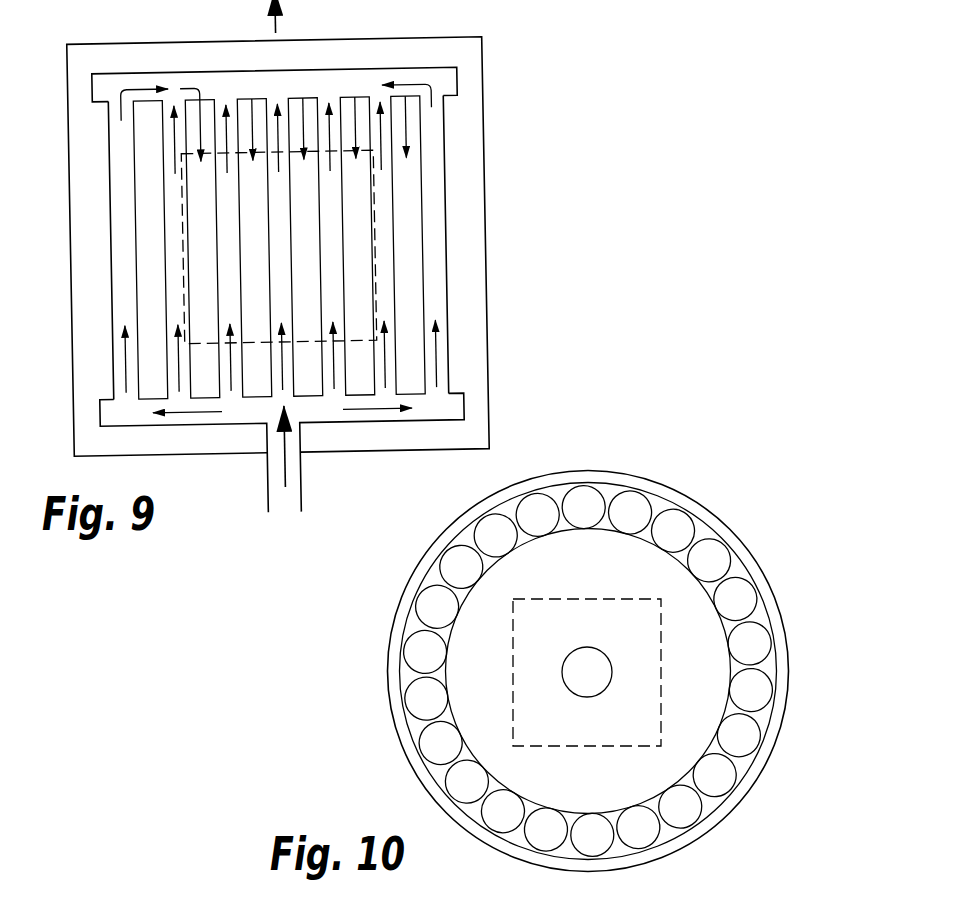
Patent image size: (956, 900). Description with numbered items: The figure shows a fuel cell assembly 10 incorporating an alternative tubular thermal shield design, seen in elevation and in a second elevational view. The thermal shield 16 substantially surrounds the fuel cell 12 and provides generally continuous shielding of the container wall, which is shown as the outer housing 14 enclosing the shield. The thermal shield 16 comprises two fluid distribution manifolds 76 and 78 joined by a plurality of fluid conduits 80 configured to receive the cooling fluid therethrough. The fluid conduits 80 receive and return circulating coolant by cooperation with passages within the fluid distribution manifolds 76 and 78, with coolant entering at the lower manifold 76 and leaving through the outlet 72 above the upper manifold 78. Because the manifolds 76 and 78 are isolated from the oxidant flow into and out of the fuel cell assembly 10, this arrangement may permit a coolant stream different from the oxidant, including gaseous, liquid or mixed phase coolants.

In FIG. 9, the fuel cell assembly 10 is at (299, 258).
In FIG. 10, the fuel cell assembly 10 is at (582, 671).
In FIG. 9, the fuel cell 12 is at (374, 205).
In FIG. 10, the fuel cell 12 is at (589, 635).
In FIG. 9, the outer housing 14 is at (488, 247).
In FIG. 10, the outer housing 14 is at (742, 543).
In FIG. 9, the thermal shield 16 is at (447, 130).
In FIG. 10, the thermal shield 16 is at (768, 615).
In FIG. 9, the coolant outlet 72 is at (504, 8).
In FIG. 9, the fluid distribution manifold 76 is at (210, 417).
In FIG. 10, the fluid distribution manifold 76 is at (770, 670).
In FIG. 9, the fluid distribution manifold 78 is at (158, 76).
In FIG. 9, the fluid conduits 80 is at (225, 256).
In FIG. 10, the fluid conduits 80 is at (423, 747).